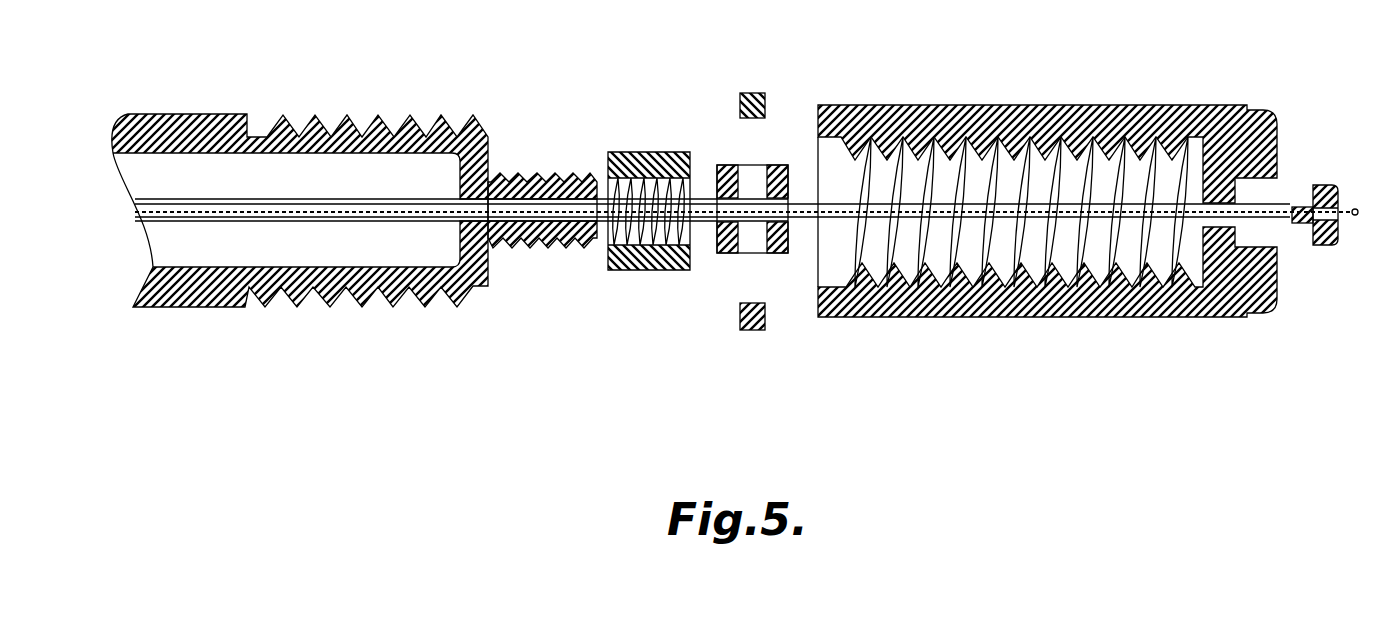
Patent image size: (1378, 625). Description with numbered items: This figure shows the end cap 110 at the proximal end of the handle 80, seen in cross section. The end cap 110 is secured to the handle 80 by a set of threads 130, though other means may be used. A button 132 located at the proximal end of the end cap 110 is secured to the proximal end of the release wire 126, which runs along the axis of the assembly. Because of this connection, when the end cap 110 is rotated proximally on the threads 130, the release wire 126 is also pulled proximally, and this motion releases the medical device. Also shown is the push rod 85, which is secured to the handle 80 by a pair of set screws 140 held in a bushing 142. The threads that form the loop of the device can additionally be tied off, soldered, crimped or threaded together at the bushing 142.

The handle 80 is at (244, 308).
The threads 130 is at (450, 125).
The push rod 85 is at (706, 198).
The bushing 142 is at (750, 255).
The set screws 140 is at (753, 92).
The end cap 110 is at (1030, 318).
The button 132 is at (1320, 184).
The release wire 126 is at (1347, 206).